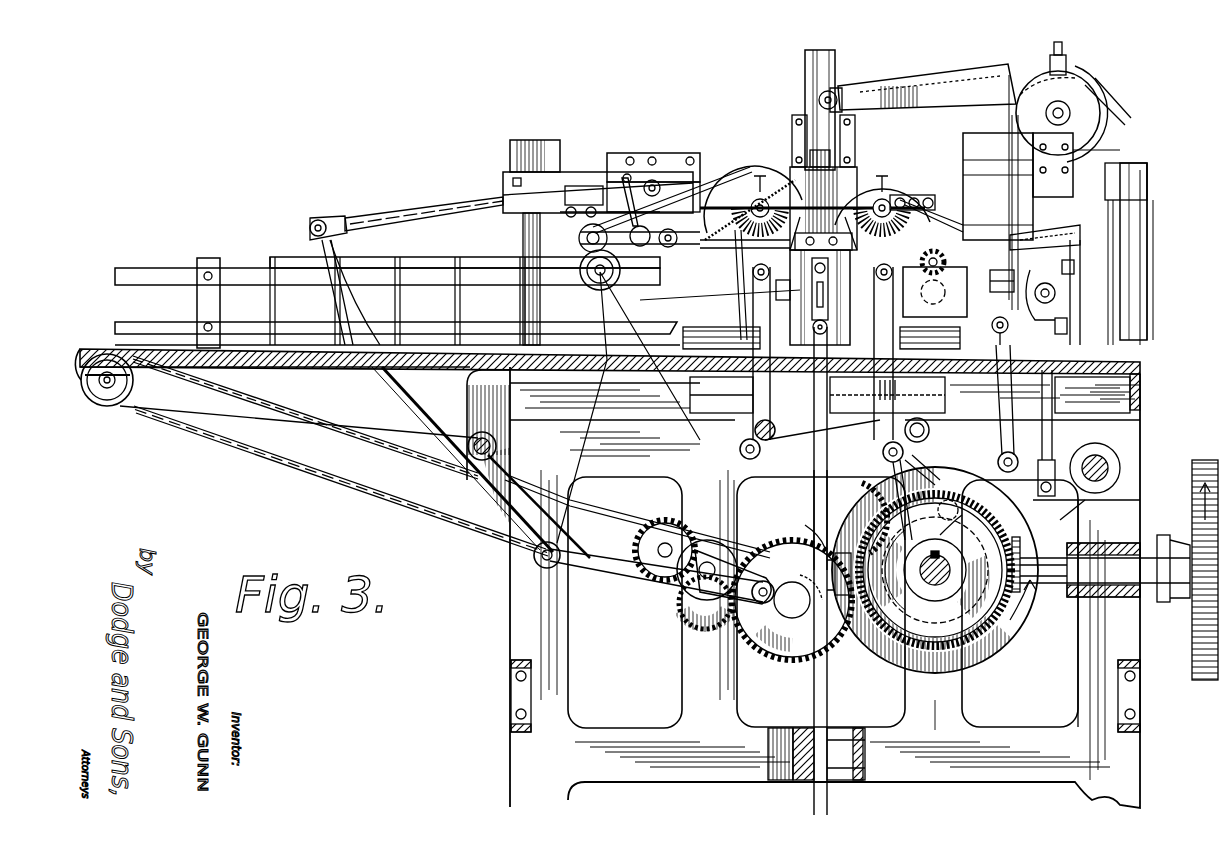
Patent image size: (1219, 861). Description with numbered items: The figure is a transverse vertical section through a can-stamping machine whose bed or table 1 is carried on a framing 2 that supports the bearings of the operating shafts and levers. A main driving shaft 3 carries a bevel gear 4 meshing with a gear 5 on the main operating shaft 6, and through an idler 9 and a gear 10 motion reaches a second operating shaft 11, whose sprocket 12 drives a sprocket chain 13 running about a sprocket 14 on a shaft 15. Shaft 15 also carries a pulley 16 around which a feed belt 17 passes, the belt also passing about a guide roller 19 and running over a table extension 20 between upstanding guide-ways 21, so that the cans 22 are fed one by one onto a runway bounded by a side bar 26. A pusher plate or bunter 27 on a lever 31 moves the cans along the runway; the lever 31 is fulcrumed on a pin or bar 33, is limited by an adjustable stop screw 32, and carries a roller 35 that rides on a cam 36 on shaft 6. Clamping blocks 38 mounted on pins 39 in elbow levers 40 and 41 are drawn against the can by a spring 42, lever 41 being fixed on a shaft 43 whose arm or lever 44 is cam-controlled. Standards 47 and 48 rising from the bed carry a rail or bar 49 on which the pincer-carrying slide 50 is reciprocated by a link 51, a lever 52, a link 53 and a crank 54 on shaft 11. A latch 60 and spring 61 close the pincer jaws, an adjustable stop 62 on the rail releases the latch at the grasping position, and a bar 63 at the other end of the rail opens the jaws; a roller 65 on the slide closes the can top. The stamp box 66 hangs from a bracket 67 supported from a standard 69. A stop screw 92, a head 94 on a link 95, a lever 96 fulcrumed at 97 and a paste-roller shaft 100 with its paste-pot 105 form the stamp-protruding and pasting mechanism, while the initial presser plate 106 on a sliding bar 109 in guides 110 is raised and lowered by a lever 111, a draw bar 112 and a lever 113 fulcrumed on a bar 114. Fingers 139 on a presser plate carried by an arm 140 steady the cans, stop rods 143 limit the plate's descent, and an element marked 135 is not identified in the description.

The bed or table 1 is at (1141, 379).
The framing 2 is at (803, 587).
The main driving shaft 3 is at (1045, 555).
The bevel gear 4 is at (1020, 590).
The gear 5 is at (935, 570).
The main operating shaft 6 is at (955, 560).
The idler 9 is at (778, 648).
The gear 10 is at (765, 535).
The second operating shaft 11 is at (690, 612).
The sprocket 12 is at (660, 590).
The sprocket chain 13 is at (386, 500).
The sprocket 14 is at (108, 395).
The shaft 15 is at (100, 404).
The belt wheel or pulley 16 is at (132, 390).
The feed belt 17 is at (355, 418).
The guide roller 19 is at (776, 430).
The table extension 20 is at (286, 368).
The guide-ways 21 is at (180, 285).
The cans 22 is at (428, 280).
The side bar 26 is at (779, 295).
The pusher plate or bunter 27 is at (820, 297).
The lever 31 is at (814, 493).
The adjustable stop screw 32 is at (808, 323).
The pin or bar 33 is at (868, 755).
The roller 35 is at (839, 542).
The cam 36 is at (985, 657).
The blocks 38 is at (885, 211).
The pins 39 is at (772, 255).
The elbow lever 40 is at (750, 383).
The elbow lever 41 is at (860, 432).
The spring 42 is at (842, 395).
The shaft 43 is at (920, 460).
The arm or lever 44 is at (860, 508).
The standard 47 is at (1143, 283).
The standard 48 is at (515, 157).
The rail or bar 49 is at (966, 186).
The pincer-carrying slide 50 is at (669, 160).
The link 51 is at (392, 214).
The lever 52 is at (458, 412).
The link 53 is at (585, 565).
The crank 54 is at (720, 618).
The latch 60 is at (622, 172).
The spring 61 is at (665, 189).
The adjustable stop 62 is at (596, 208).
The bar 63 is at (702, 195).
The roller 65 is at (580, 243).
The stamp box 66 is at (1050, 234).
The bracket 67 is at (1122, 141).
The standard 69 is at (1102, 108).
The stop screw 92 is at (1075, 266).
The head or enlargement 94 is at (1068, 325).
The link 95 is at (1004, 307).
The lever 96 is at (1007, 408).
The fulcrum 97 is at (1056, 478).
The shaft 100 is at (938, 402).
The paste-pot or receptacle 105 is at (935, 284).
The plate 106 is at (823, 200).
The sliding bar 109 is at (812, 72).
The guides 110 is at (857, 137).
The lever 111 is at (930, 95).
The draw bar or rod 112 is at (1092, 394).
The lever 113 is at (1010, 515).
The bar 114 is at (1110, 467).
The link 135 is at (823, 356).
The fingers 139 is at (841, 338).
The arm 140 is at (792, 130).
The stop rods 143 is at (728, 300).